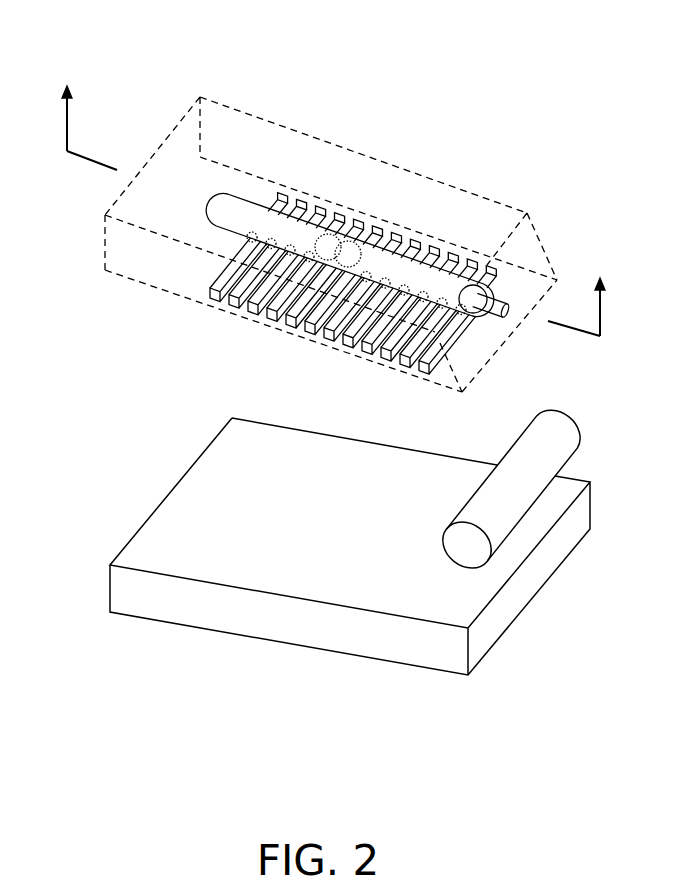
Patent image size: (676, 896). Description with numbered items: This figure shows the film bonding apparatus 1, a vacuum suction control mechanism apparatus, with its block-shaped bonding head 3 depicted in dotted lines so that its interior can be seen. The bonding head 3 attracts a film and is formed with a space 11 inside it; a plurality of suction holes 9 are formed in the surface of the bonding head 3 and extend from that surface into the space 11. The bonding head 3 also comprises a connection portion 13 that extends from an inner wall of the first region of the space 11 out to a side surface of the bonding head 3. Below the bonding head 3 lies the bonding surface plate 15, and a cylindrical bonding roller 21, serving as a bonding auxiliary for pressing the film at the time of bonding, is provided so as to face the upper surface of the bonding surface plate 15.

The film bonding apparatus 1 is at (445, 95).
The bonding head 3 is at (262, 38).
The suction holes 9 is at (365, 227).
The space 11 is at (262, 206).
The connection portion 13 is at (502, 298).
The bonding surface plate 15 is at (138, 602).
The bonding roller 21 is at (462, 555).